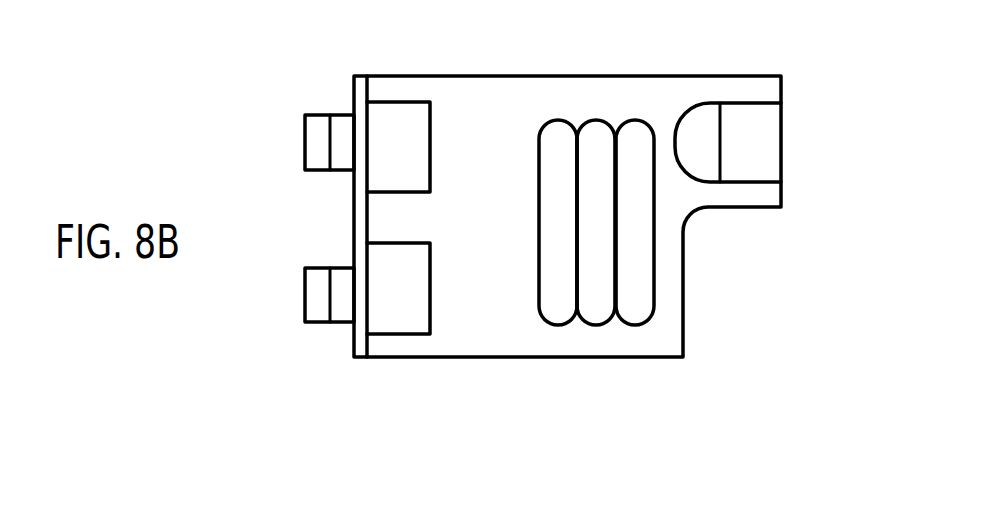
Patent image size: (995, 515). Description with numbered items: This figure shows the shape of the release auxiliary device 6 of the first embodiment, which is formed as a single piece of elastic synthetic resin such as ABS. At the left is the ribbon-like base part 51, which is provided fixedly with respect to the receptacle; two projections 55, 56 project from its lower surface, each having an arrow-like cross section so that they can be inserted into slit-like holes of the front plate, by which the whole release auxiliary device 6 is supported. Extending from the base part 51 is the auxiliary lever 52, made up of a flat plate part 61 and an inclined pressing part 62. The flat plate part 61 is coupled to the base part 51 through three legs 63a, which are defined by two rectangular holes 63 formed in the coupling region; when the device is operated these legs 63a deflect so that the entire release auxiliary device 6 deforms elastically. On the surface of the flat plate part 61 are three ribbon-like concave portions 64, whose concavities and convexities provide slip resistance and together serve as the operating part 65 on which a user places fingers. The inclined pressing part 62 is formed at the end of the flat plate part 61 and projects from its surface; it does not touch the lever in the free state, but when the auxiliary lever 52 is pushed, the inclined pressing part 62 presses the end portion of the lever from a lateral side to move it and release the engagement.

The release auxiliary device 6 is at (553, 28).
The base part 51 is at (361, 355).
The auxiliary lever 52 is at (595, 216).
The projection 55 is at (305, 142).
The projection 56 is at (305, 304).
The flat plate part 61 is at (668, 321).
The inclined pressing part 62 is at (767, 207).
The rectangular hole 63 is at (410, 122).
The leg 63a is at (380, 75).
The concave portion 64 is at (637, 315).
The operating part 65 is at (614, 110).